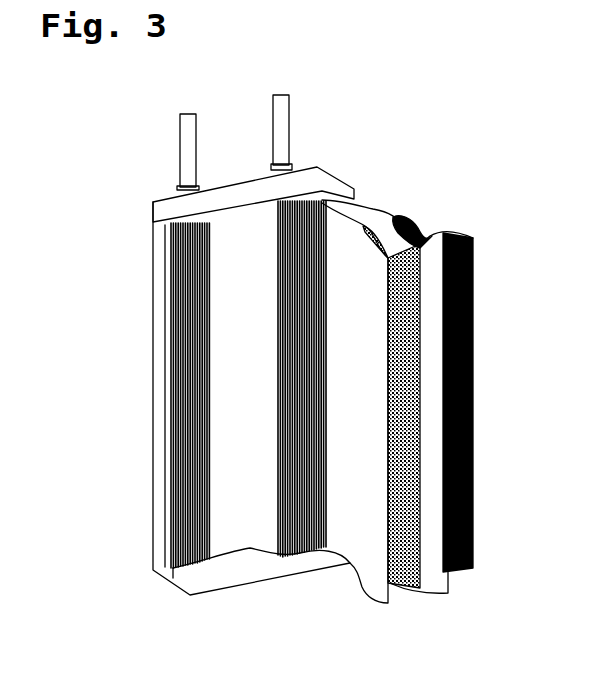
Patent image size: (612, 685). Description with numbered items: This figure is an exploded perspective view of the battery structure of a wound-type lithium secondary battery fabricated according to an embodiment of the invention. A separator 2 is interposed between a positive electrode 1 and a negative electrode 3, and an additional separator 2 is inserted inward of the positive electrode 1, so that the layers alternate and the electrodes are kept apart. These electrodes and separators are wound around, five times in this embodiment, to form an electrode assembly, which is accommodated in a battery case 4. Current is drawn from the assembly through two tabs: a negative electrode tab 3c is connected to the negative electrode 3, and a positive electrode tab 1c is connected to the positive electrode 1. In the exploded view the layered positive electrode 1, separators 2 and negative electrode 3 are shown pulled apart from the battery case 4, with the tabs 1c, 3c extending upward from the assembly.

The positive electrode 1 is at (403, 455).
The positive electrode tab 1c is at (180, 149).
The separator 2 is at (431, 311).
The negative electrode 3 is at (461, 525).
The negative electrode tab 3c is at (288, 128).
The battery case 4 is at (157, 528).